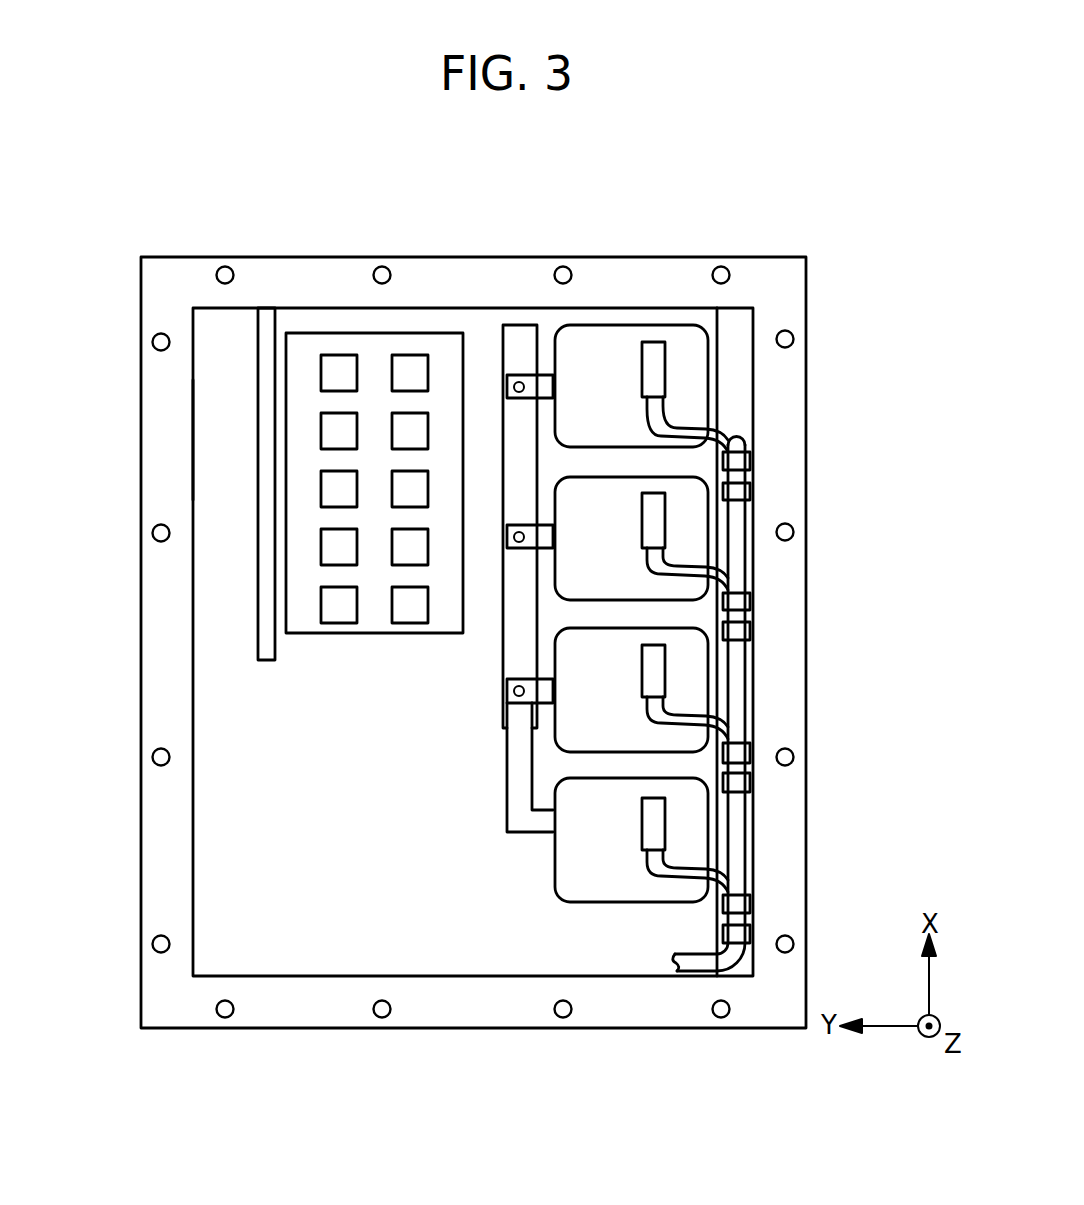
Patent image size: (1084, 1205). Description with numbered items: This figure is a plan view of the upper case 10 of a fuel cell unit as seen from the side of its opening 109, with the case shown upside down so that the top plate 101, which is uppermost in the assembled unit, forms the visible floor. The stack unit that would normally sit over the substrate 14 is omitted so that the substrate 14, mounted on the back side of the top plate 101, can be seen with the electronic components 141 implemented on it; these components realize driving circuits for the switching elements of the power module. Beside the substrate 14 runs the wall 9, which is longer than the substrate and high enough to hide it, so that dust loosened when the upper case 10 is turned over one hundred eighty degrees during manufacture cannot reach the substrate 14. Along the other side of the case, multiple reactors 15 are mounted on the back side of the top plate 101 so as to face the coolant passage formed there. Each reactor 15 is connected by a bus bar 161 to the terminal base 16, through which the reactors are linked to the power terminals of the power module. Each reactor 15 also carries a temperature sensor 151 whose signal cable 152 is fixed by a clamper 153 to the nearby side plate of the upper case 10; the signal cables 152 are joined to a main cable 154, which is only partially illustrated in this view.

The upper case 10 is at (137, 238).
The top plate 101 is at (243, 320).
The opening 109 is at (197, 437).
The wall 9 is at (267, 385).
The substrate 14 is at (443, 353).
The electronic components 141 is at (410, 367).
The terminal base 16 is at (515, 340).
The bus bar 161 is at (545, 383).
The reactor 15 is at (690, 342).
The temperature sensor 151 is at (652, 350).
The signal cable 152 is at (688, 410).
The clamper 153 is at (745, 461).
The main cable 154 is at (738, 700).